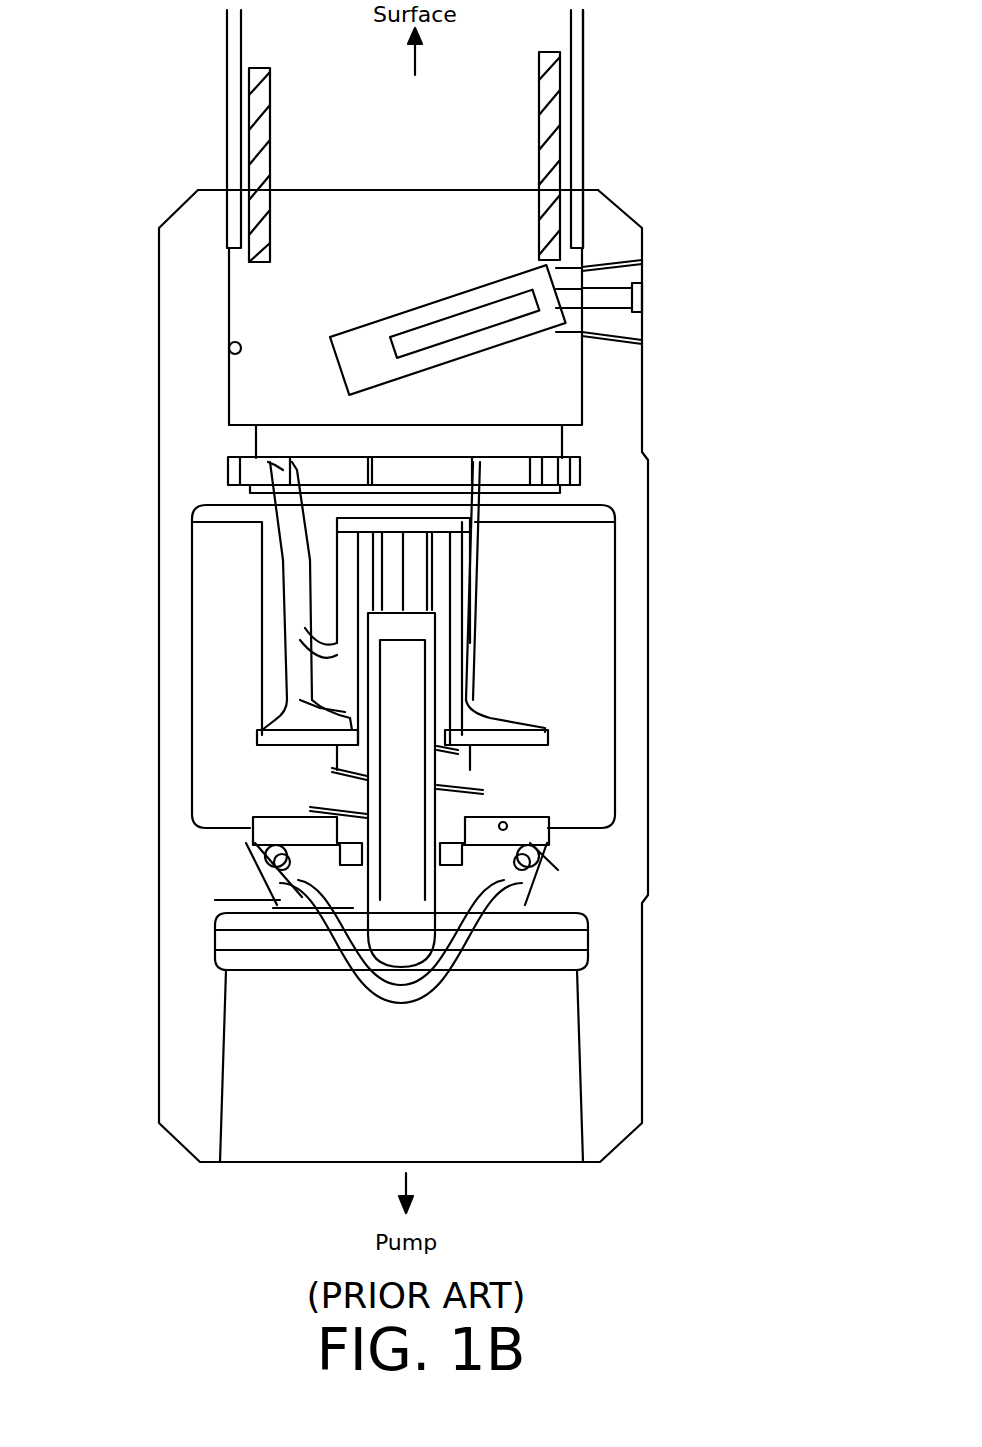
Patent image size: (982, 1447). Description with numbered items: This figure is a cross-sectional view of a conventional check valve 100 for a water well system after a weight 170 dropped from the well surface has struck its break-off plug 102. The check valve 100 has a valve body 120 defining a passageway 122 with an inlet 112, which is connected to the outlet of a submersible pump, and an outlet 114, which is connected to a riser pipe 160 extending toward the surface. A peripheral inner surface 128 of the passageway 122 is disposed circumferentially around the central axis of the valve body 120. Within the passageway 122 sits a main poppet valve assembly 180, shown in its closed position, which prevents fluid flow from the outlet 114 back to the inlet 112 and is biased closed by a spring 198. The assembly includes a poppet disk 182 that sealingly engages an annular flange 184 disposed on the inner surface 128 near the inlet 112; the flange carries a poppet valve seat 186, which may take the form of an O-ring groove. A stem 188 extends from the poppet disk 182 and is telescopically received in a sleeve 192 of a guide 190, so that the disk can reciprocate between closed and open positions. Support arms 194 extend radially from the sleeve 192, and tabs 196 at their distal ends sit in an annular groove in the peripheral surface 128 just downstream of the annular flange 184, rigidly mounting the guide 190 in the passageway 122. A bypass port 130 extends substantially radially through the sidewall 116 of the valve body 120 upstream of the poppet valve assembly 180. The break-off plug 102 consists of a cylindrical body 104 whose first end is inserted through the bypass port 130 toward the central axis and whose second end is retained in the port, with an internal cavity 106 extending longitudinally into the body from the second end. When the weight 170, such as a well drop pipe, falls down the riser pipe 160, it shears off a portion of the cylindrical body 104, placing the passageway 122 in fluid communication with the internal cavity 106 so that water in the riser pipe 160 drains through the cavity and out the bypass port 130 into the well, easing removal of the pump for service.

The check valve 100 is at (712, 786).
The break-off plug 102 is at (360, 335).
The cylindrical body 104 is at (437, 298).
The internal cavity 106 is at (612, 300).
The inlet 112 is at (307, 1133).
The outlet 114 is at (412, 207).
The sidewall 116 is at (612, 395).
The valve body 120 is at (655, 493).
The passageway 122 is at (405, 336).
The peripheral inner surface 128 is at (228, 348).
The bypass port 130 is at (645, 295).
The riser pipe 160 is at (585, 172).
The weight 170 is at (552, 145).
The main poppet valve assembly 180 is at (572, 677).
The poppet disk 182 is at (353, 908).
The annular flange 184 is at (553, 872).
The poppet valve seat 186 is at (275, 860).
The stem 188 is at (555, 770).
The guide 190 is at (265, 597).
The sleeve 192 is at (350, 648).
The support arms 194 is at (270, 547).
The tabs 196 is at (238, 473).
The spring 198 is at (333, 770).